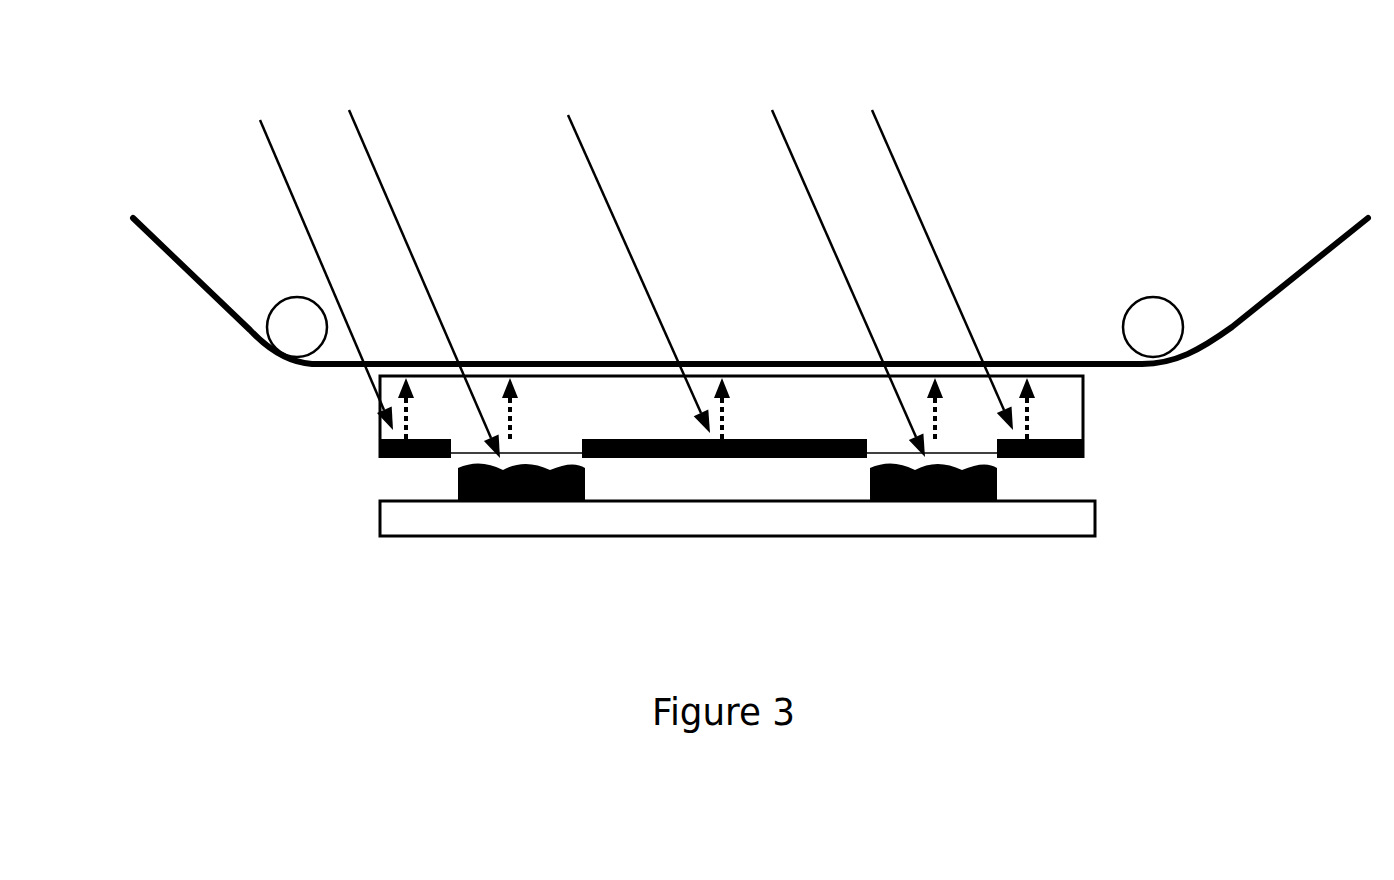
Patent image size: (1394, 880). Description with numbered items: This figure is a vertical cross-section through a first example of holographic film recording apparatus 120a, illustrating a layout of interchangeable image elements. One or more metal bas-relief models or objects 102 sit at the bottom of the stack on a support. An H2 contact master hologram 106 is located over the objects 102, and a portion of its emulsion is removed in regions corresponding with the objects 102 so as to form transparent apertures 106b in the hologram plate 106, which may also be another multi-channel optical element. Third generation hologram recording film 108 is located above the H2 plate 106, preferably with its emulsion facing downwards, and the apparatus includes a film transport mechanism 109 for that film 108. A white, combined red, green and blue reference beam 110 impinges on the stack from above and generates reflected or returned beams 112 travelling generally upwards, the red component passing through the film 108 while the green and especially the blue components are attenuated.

The metal bas-relief models or objects 102 is at (444, 514).
The H2 contact master hologram 106 is at (693, 417).
The transparent apertures 106b is at (437, 466).
The third generation hologram (H3) recording film 108 is at (744, 291).
The film transport mechanism 109 is at (290, 306).
The white reference beam 110 is at (655, 110).
The reflected or returned beams 112 is at (775, 411).
The holographic film recording apparatus 120a is at (246, 651).